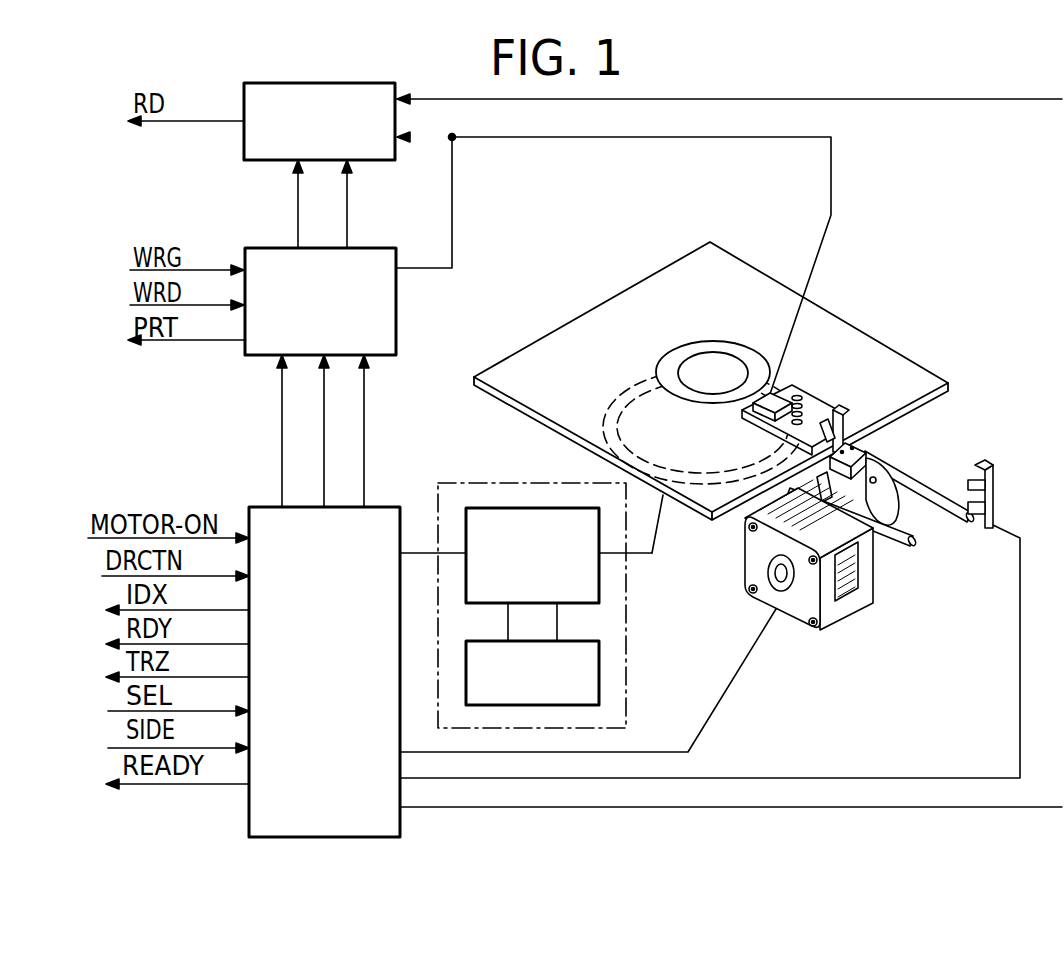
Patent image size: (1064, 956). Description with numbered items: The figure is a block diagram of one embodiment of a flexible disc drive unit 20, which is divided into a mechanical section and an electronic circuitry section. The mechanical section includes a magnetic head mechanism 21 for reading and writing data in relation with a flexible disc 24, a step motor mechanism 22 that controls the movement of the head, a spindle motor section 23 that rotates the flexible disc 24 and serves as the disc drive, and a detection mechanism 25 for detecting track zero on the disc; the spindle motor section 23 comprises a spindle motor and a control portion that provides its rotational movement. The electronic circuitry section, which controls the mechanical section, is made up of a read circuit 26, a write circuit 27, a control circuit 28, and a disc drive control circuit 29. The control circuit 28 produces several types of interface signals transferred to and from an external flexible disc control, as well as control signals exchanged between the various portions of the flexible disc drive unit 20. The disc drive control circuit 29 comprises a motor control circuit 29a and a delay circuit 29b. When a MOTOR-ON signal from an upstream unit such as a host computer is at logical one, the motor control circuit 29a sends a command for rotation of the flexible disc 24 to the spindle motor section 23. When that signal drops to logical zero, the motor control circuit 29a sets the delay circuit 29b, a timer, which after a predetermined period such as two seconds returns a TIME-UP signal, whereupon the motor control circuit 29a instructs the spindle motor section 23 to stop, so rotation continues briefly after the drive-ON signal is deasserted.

The flexible disc drive unit 20 is at (950, 88).
The magnetic head mechanism 21 is at (814, 397).
The step motor mechanism 22 is at (835, 623).
The spindle motor section 23 is at (672, 506).
The flexible disc 24 is at (577, 317).
The detection mechanism 25 is at (993, 486).
The read circuit 26 is at (262, 162).
The write circuit 27 is at (262, 357).
The control circuit 28 is at (255, 505).
The disc drive control circuit 29 is at (452, 483).
The motor control circuit 29a is at (600, 588).
The delay circuit 29b is at (600, 650).